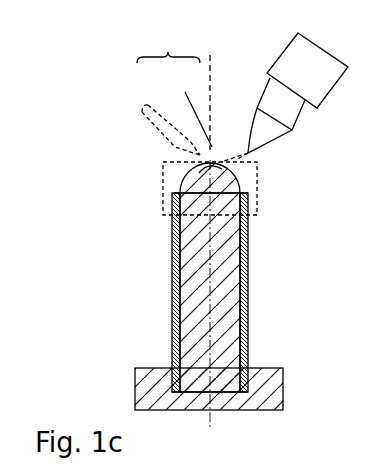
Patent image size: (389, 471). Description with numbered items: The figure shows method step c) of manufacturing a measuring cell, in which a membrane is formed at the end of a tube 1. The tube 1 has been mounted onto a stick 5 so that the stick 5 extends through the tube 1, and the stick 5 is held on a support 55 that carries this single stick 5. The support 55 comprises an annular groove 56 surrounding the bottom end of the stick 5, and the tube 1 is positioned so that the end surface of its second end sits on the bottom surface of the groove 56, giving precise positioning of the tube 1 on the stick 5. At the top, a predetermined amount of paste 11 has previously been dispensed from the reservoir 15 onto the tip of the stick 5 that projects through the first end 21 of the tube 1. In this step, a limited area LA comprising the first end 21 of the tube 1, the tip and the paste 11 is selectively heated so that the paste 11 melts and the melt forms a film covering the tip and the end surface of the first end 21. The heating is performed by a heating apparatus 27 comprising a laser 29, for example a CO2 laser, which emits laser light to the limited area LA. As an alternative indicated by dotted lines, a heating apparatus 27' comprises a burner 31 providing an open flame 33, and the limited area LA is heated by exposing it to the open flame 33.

The tube 1 is at (201, 286).
The stick 5 is at (162, 277).
The paste 11 is at (210, 172).
The reservoir 15 is at (213, 63).
The first end 21 is at (171, 210).
The heating apparatus 27 is at (303, 95).
The heating apparatus 27' is at (174, 89).
The laser 29 is at (322, 82).
The burner 31 is at (174, 127).
The open flame 33 is at (193, 109).
The support 55 is at (273, 368).
The annular groove 56 is at (178, 387).
The limited area LA is at (257, 193).